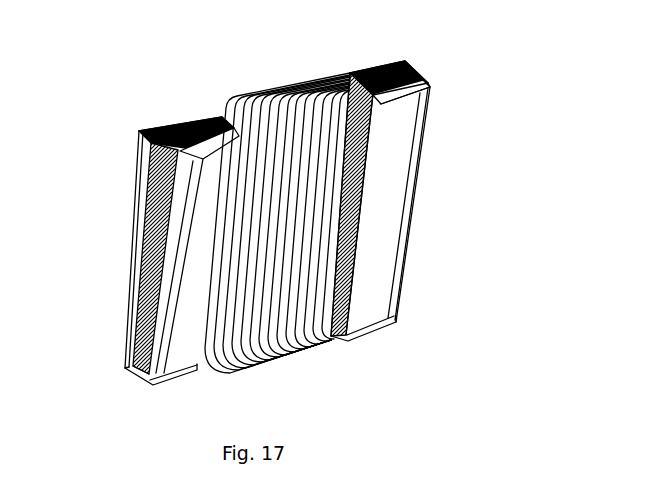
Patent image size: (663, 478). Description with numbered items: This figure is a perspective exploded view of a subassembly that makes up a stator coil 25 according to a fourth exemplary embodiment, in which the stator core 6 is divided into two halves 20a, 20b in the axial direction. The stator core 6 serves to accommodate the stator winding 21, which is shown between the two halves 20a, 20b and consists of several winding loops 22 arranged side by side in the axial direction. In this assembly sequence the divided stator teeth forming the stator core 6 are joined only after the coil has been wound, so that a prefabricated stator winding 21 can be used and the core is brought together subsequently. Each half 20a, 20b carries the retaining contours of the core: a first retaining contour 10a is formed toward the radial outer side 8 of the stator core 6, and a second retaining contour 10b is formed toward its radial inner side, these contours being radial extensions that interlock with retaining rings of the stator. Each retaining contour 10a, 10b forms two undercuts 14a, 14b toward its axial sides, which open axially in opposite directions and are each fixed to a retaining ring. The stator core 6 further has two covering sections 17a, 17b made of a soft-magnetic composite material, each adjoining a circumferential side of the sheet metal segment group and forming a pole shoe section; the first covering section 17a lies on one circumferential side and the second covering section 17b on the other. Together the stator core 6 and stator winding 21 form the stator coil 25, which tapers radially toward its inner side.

The stator coil 25 is at (113, 115).
The first half of stator core 20a is at (115, 255).
The second half of stator core 20b is at (459, 136).
The stator winding 21 is at (267, 82).
The winding loops 22 is at (279, 356).
The stator core 6 is at (111, 212).
The radial outer side 8 is at (197, 100).
The first retaining contour 10a is at (187, 120).
The second retaining contour 10b is at (171, 386).
The first undercut 14a is at (140, 143).
The second undercut 14b is at (426, 74).
The first covering section 17a is at (194, 346).
The second covering section 17b is at (133, 288).